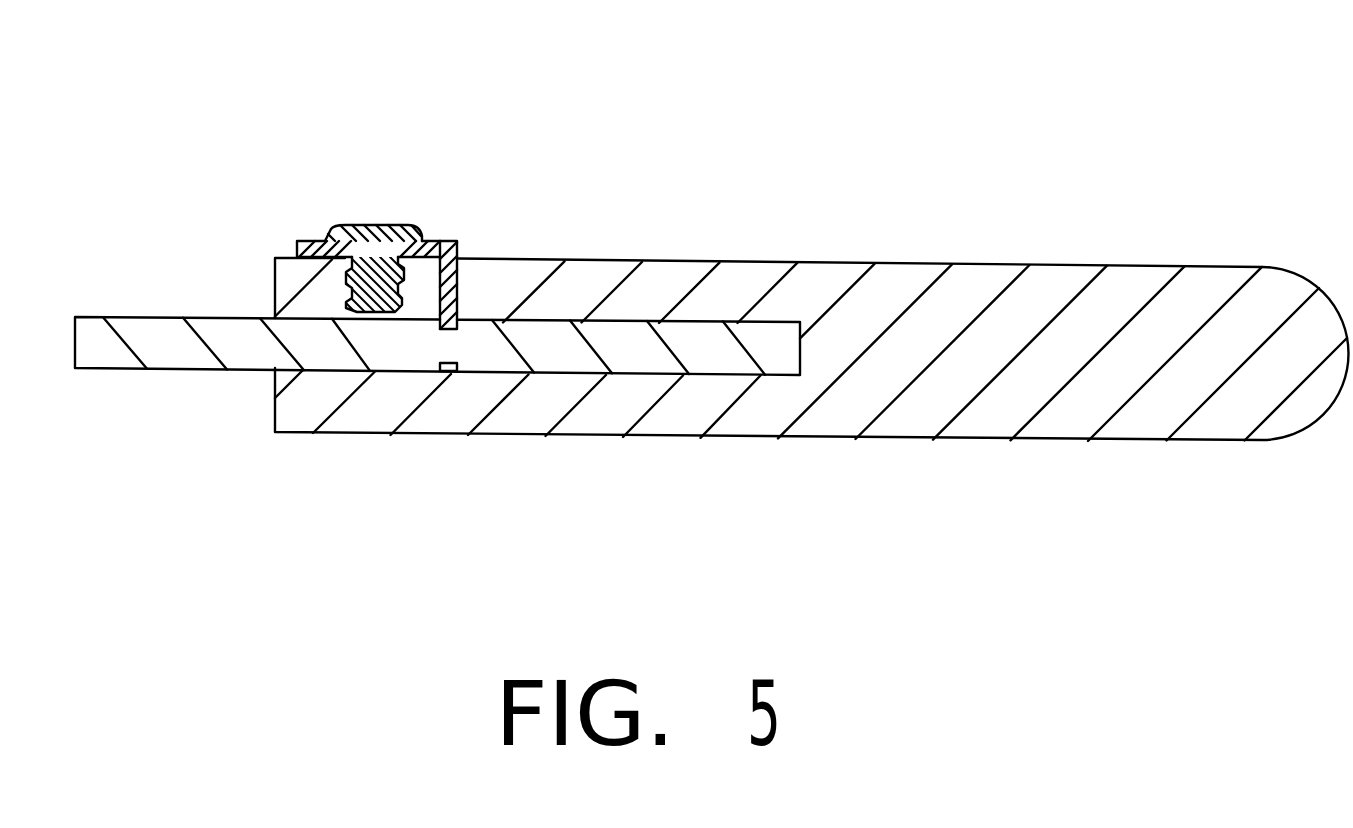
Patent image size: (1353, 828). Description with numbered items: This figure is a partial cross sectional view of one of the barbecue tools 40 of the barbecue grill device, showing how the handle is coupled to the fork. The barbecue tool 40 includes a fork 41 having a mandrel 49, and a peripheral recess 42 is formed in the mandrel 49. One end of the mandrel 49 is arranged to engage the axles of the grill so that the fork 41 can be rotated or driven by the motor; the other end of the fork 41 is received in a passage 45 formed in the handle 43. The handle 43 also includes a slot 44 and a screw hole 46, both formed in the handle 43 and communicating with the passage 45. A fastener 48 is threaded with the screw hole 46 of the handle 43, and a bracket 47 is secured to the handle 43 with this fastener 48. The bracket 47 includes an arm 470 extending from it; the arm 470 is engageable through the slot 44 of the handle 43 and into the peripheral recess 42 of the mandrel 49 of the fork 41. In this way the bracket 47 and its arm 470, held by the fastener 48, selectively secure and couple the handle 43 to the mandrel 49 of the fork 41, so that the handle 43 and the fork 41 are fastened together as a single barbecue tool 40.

The barbecue tool 40 is at (1103, 182).
The fork 41 is at (162, 298).
The peripheral recess 42 is at (447, 462).
The handle 43 is at (823, 283).
The slot 44 is at (457, 292).
The passage 45 is at (307, 325).
The screw hole 46 is at (313, 240).
The bracket 47 is at (441, 240).
The fastener 48 is at (375, 225).
The mandrel 49 is at (632, 357).
The arm 470 is at (340, 415).